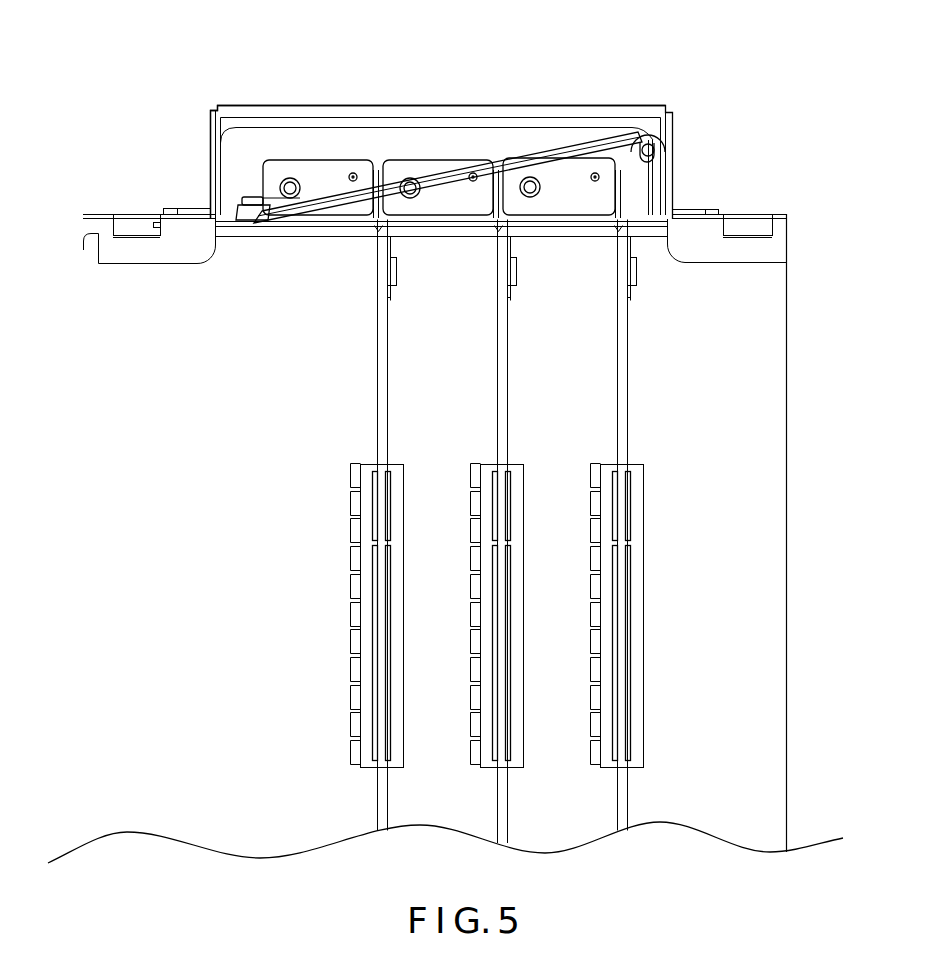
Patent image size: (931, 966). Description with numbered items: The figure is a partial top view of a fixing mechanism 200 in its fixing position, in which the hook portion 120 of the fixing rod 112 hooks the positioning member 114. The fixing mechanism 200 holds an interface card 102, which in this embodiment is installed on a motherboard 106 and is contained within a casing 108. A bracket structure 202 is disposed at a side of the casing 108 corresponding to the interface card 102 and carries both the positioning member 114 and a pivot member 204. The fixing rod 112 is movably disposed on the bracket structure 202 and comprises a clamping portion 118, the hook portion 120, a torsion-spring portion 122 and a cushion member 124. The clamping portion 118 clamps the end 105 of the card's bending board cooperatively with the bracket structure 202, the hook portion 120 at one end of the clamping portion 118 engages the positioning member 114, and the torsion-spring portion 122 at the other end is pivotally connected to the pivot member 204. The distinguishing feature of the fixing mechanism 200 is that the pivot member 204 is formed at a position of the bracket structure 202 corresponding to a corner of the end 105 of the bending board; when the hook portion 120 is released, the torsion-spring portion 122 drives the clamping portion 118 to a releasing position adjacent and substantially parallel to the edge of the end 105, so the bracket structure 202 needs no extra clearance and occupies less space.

The interface card 102 is at (623, 413).
The end of the bending board 105 is at (630, 272).
The motherboard 106 is at (733, 735).
The casing 108 is at (137, 253).
The fixing rod 112 is at (329, 190).
The positioning member 114 is at (252, 198).
The clamping portion 118 is at (603, 143).
The hook portion 120 is at (289, 177).
The torsion-spring portion 122 is at (653, 143).
The cushion member 124 is at (442, 176).
The fixing mechanism 200 is at (127, 188).
The bracket structure 202 is at (252, 128).
The pivot member 204 is at (656, 150).